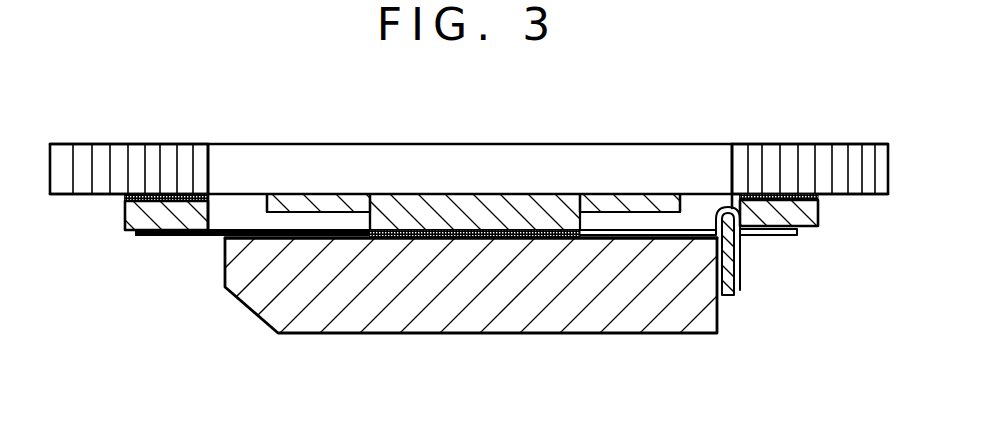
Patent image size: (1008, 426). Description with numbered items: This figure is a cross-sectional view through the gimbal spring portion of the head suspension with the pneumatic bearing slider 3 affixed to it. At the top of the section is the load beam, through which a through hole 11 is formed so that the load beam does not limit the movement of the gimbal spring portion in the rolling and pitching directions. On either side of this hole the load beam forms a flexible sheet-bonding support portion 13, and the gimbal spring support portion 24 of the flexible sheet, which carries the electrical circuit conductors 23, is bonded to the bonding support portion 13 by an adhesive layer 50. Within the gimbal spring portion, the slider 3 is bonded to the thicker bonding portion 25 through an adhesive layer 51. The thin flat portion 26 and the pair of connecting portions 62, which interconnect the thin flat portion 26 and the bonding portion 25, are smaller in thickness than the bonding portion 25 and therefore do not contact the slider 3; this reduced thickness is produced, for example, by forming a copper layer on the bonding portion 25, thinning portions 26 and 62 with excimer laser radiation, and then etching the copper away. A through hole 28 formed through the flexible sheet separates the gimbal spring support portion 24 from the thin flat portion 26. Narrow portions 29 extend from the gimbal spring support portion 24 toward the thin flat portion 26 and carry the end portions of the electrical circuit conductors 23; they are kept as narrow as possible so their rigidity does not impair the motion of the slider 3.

The pneumatic bearing slider 3 is at (551, 320).
The through hole 11 is at (628, 160).
The flexible sheet-bonding support portion 13 is at (137, 156).
The electrical circuit conductors 23 is at (182, 237).
The gimbal spring support portion 24 is at (130, 226).
The bonding portion 25 is at (453, 200).
The thin flat portion 26 is at (315, 203).
The through hole 28 is at (235, 210).
The narrow portions 29 is at (730, 299).
The adhesive layer 50 is at (124, 200).
The adhesive layer 51 is at (431, 241).
The connecting portions 62 is at (352, 205).